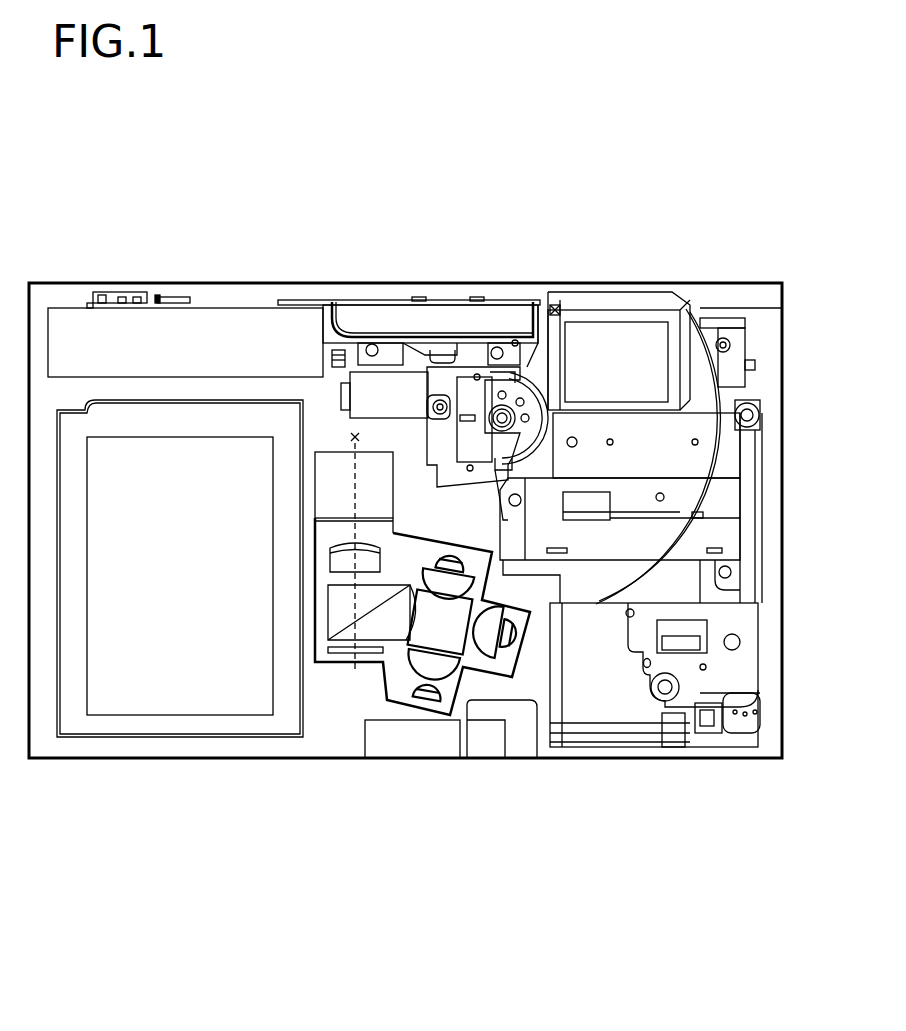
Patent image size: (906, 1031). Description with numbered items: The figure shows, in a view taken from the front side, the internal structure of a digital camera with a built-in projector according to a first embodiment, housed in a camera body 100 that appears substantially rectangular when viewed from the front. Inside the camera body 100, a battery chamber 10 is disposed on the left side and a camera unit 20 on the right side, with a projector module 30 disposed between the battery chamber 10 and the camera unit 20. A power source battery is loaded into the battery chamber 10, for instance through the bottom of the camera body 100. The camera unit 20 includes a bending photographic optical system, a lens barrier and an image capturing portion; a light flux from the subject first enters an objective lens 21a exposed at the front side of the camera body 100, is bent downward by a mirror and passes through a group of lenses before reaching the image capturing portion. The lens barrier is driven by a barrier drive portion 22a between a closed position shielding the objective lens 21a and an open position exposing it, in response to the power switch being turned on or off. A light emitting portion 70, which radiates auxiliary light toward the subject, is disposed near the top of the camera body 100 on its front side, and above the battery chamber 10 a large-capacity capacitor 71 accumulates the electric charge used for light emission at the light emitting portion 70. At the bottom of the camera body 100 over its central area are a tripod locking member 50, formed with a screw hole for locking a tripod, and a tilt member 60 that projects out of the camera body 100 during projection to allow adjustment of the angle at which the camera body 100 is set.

The camera body 100 is at (785, 836).
The battery chamber 10 is at (117, 725).
The camera unit 20 is at (782, 272).
The objective lens 21a is at (657, 355).
The barrier drive portion 22a is at (508, 392).
The projector module 30 is at (363, 663).
The tripod locking member 50 is at (522, 745).
The tilt member 60 is at (412, 747).
The light emitting portion 70 is at (392, 318).
The large-capacity capacitor 71 is at (217, 330).